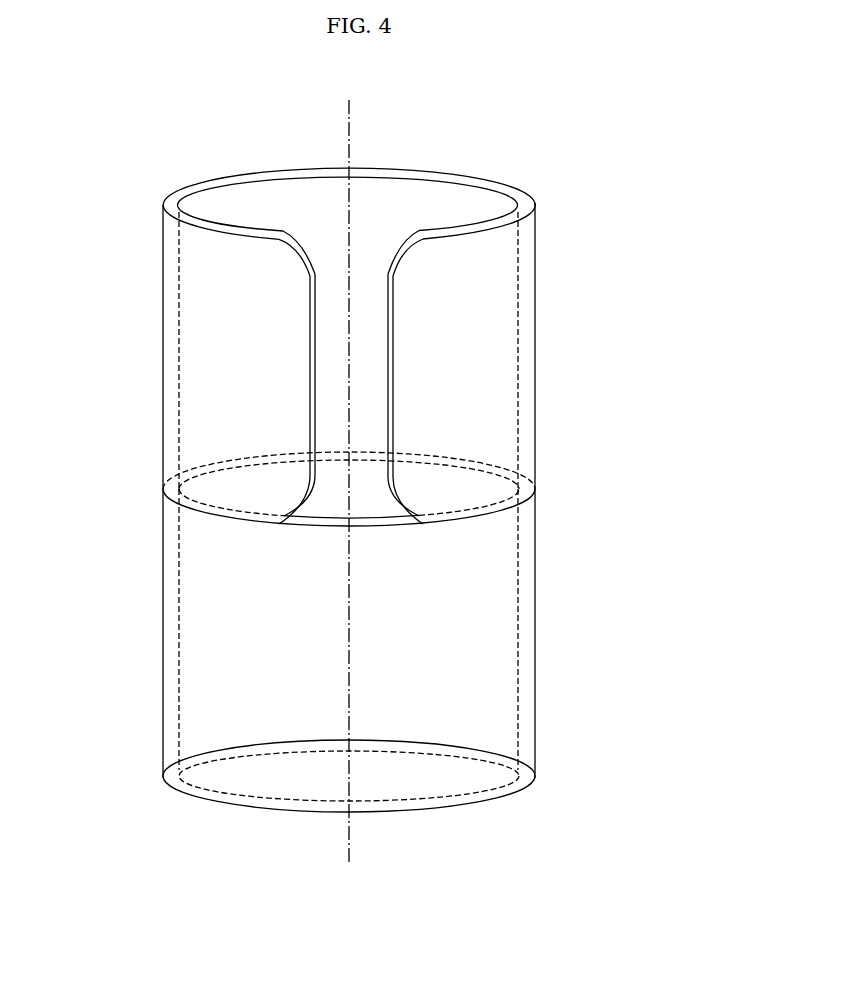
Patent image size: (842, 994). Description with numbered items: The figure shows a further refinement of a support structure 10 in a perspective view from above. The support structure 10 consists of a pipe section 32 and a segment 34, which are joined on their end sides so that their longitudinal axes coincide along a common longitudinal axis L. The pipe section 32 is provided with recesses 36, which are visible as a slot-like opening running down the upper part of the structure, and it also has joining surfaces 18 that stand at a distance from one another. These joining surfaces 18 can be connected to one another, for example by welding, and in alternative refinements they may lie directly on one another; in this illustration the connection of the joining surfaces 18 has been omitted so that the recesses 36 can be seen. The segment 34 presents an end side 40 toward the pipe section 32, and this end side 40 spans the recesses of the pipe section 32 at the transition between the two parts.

The support structure 10 is at (347, 447).
The joining surfaces 18 is at (313, 455).
The pipe section 32 is at (478, 295).
The segment 34 is at (473, 620).
The recesses 36 is at (285, 265).
The end side 40 is at (362, 522).
The common longitudinal axis L is at (349, 123).